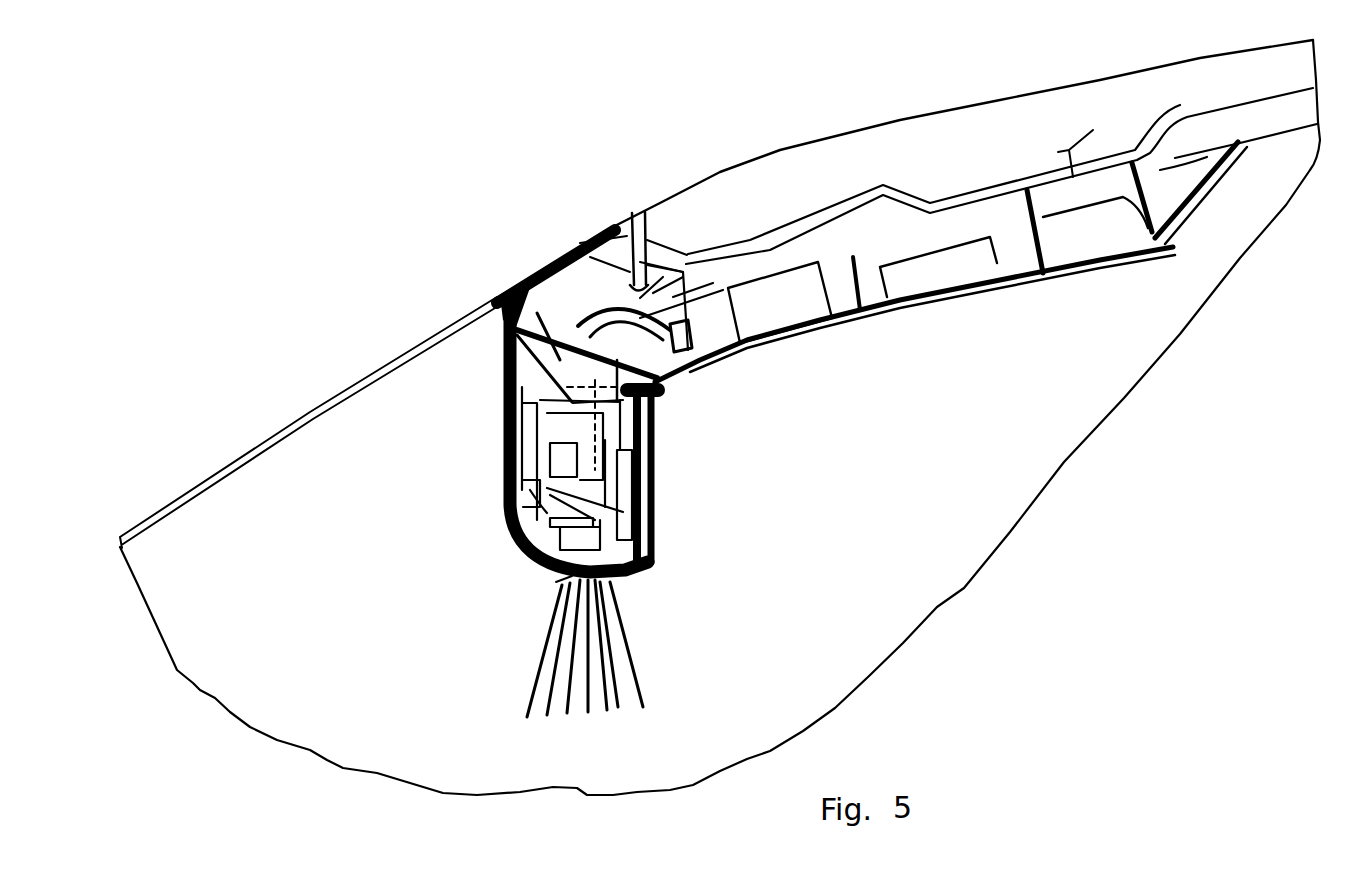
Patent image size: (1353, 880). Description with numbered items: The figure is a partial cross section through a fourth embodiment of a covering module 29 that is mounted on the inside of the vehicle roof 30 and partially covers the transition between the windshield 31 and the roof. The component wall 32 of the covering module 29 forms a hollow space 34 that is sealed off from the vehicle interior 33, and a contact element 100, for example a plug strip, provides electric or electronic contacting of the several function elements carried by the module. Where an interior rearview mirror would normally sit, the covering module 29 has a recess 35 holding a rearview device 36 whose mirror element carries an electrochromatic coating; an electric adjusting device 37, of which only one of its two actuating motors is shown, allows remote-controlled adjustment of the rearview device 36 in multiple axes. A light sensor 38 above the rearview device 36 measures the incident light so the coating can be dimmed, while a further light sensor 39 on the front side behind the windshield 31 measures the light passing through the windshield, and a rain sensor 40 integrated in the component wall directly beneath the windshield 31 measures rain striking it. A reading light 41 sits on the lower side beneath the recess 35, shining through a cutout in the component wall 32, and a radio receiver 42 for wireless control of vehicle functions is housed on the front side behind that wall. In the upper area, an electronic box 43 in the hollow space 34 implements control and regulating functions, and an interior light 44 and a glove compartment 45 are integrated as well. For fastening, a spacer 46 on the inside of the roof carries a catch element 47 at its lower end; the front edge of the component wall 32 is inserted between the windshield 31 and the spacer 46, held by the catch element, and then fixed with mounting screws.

The covering module 29 is at (889, 539).
The vehicle roof 30 is at (850, 118).
The windshield 31 is at (318, 412).
The component wall 32 is at (708, 365).
The interior 33 is at (994, 430).
The hollow space 34 is at (900, 250).
The recess 35 is at (682, 505).
The rearview device 36 is at (632, 460).
The electric adjusting device 37 is at (530, 463).
The light sensor 38 is at (658, 395).
The light sensor 39 is at (503, 383).
The rain sensor 40 is at (590, 290).
The reading light 41 is at (612, 587).
The radio receiver 42 is at (505, 490).
The electronic box 43 is at (784, 325).
The interior light 44 is at (953, 288).
The glove compartment 45 is at (1105, 253).
The spacer 46 is at (696, 287).
The catch element 47 is at (521, 304).
The contact element 100 is at (1017, 273).